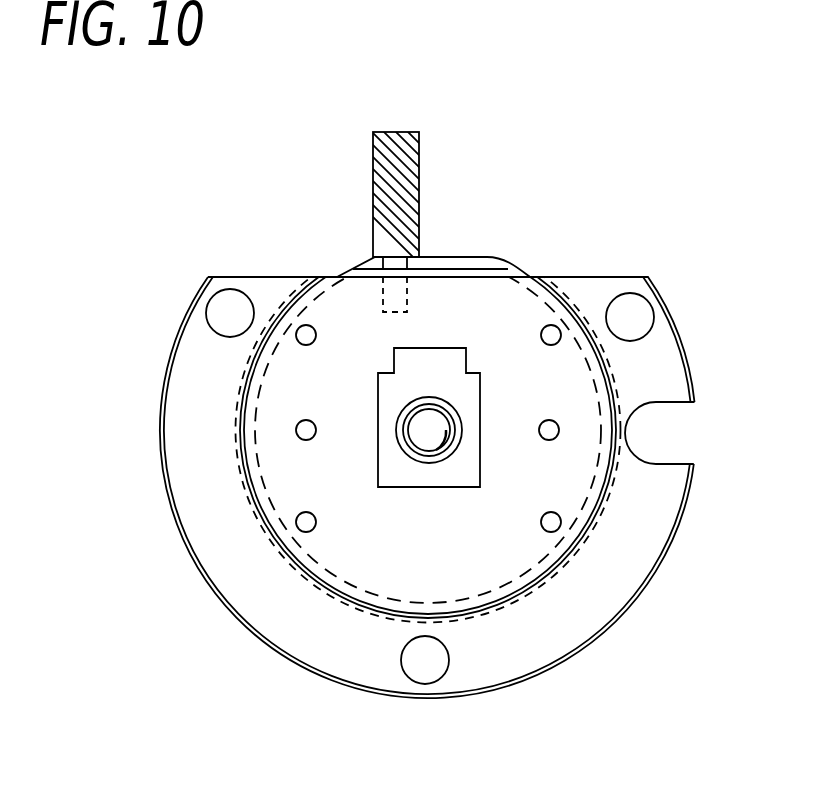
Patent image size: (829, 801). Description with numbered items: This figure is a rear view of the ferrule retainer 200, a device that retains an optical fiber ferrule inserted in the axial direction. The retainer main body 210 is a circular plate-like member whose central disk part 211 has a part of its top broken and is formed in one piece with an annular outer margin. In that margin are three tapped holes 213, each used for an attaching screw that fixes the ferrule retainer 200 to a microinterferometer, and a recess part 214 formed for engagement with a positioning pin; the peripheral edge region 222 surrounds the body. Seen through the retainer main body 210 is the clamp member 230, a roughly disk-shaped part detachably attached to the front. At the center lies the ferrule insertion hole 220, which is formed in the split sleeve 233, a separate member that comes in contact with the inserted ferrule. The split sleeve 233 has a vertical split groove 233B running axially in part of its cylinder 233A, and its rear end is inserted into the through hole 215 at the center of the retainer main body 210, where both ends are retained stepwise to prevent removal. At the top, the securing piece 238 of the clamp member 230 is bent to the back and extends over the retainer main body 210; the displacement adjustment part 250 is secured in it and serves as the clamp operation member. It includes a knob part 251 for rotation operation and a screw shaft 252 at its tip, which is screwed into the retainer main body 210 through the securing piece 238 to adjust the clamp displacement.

The ferrule retainer 200 is at (260, 247).
The retainer main body 210 is at (155, 377).
The disk part 211 is at (272, 438).
The tapped holes 213 is at (224, 312).
The recess part 214 is at (668, 463).
The through hole 215 is at (444, 438).
The ferrule insertion hole 220 is at (448, 424).
The outer edge 222 is at (230, 588).
The clamp member 230 is at (512, 252).
The split sleeve 233 is at (396, 404).
The cylinder 233A is at (427, 458).
The vertical split groove 233B is at (400, 432).
The securing piece 238 is at (452, 258).
The displacement adjustment part 250 is at (430, 155).
The knob part 251 is at (373, 172).
The screw shaft 252 is at (409, 290).